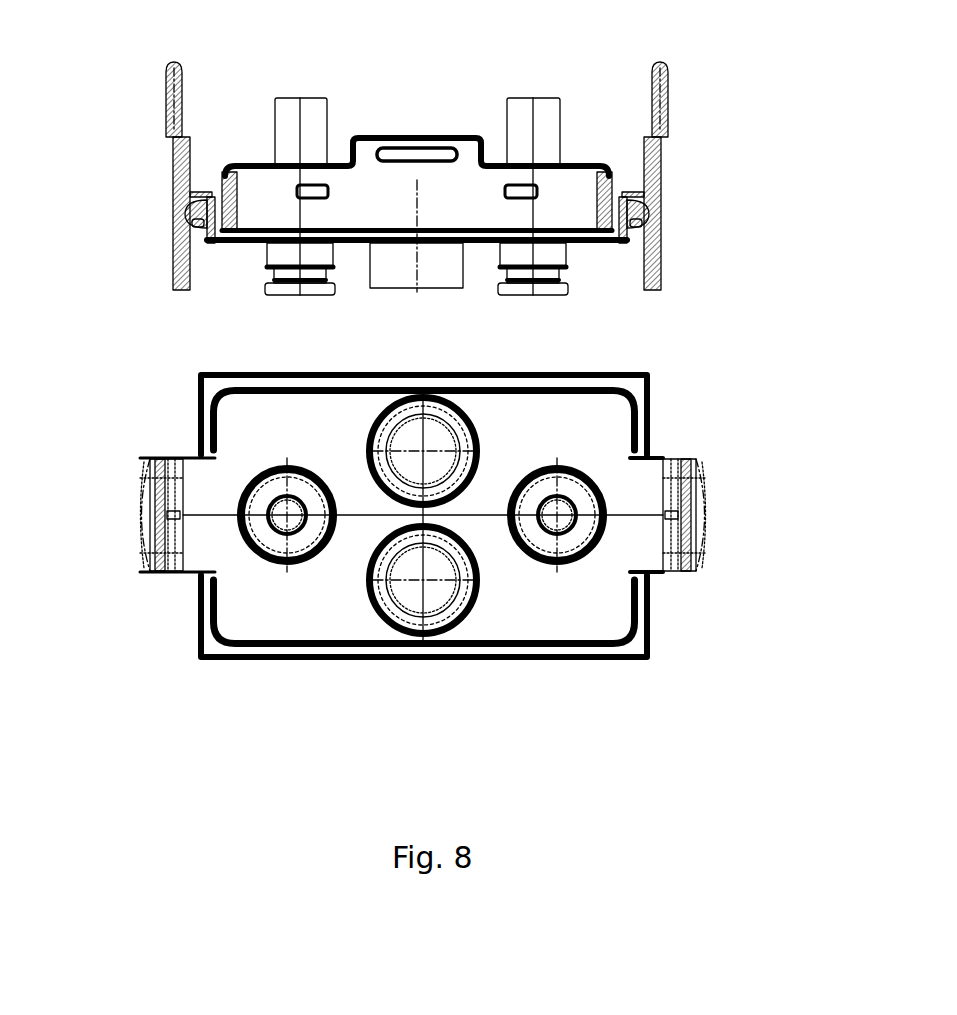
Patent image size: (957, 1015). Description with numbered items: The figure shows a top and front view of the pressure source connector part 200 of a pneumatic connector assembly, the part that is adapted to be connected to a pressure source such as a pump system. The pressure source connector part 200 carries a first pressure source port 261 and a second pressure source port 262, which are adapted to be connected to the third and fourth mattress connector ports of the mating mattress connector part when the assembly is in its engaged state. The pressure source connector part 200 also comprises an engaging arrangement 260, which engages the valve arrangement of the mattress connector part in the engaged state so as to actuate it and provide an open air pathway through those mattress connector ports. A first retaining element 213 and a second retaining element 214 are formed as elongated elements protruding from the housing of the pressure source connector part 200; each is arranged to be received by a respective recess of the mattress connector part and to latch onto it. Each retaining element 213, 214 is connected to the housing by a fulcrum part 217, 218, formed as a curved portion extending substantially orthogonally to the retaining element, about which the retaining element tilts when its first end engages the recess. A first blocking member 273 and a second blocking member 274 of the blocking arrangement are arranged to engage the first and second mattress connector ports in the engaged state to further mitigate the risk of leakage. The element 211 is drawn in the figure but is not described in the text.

The pressure source connector part 200 is at (106, 122).
The base plate 211 is at (582, 246).
The first retaining element 213 is at (176, 197).
The second retaining element 214 is at (653, 185).
The fulcrum part 217 is at (195, 212).
The fulcrum part 218 is at (636, 212).
The engaging arrangement 260 is at (478, 94).
The first pressure source port 261 is at (277, 110).
The second pressure source port 262 is at (552, 112).
The first blocking member 273 is at (398, 610).
The second blocking member 274 is at (397, 288).